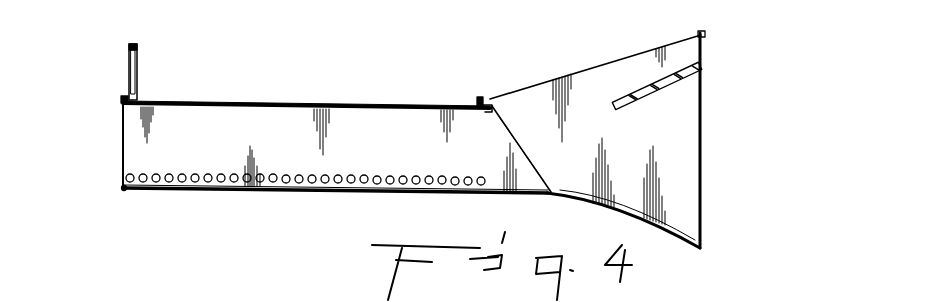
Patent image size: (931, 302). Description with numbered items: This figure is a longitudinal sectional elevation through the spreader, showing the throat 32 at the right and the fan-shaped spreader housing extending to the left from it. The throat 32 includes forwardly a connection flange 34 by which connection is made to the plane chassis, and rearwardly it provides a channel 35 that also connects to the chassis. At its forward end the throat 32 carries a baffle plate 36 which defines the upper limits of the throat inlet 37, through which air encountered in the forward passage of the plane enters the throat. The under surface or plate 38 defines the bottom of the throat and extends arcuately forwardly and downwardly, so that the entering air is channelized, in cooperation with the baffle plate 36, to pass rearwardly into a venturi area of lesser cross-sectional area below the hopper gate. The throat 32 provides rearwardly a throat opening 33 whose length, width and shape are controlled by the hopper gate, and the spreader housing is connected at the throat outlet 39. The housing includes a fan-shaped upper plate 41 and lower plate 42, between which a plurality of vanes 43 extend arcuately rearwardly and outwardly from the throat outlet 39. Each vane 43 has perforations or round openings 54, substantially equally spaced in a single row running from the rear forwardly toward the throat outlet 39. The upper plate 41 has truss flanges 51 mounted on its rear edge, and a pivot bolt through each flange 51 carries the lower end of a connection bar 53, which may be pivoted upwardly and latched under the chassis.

The throat 32 is at (613, 52).
The throat opening 33 is at (540, 122).
The connection flange 34 is at (702, 32).
The channel 35 is at (477, 101).
The baffle plate 36 is at (678, 74).
The throat inlet 37 is at (675, 132).
The under surface or plate 38 is at (642, 218).
The throat outlet 39 is at (527, 157).
The upper plate 41 is at (360, 105).
The lower plate 42 is at (315, 195).
The vanes 43 is at (218, 146).
The truss flanges 51 is at (124, 99).
The connection bar 53 is at (130, 74).
The perforations or round openings 54 is at (402, 148).